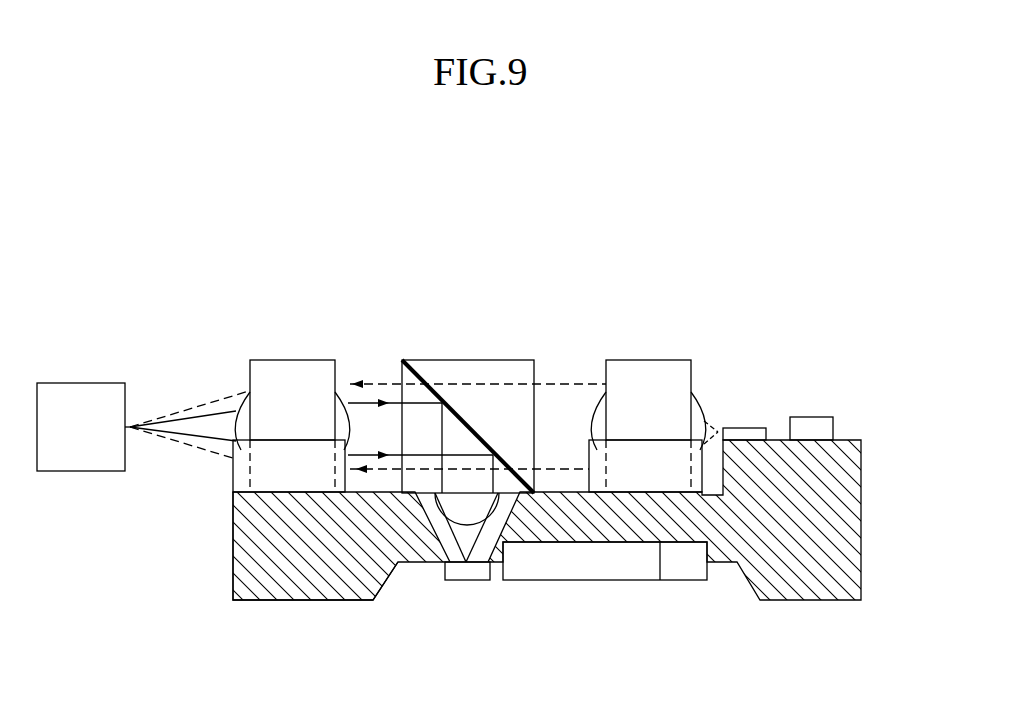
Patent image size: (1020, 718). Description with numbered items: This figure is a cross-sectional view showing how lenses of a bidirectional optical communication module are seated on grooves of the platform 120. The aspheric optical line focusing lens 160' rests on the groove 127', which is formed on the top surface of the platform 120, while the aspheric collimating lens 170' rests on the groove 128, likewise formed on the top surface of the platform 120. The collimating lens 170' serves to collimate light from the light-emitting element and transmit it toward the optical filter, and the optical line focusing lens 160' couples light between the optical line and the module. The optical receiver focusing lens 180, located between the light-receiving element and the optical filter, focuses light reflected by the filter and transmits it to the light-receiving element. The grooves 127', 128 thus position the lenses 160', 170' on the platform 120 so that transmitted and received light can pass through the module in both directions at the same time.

The optical line focusing lens 160' is at (295, 384).
The collimating lens 170' is at (659, 384).
The optical receiver focusing lens 180 is at (442, 498).
The groove 128 is at (680, 494).
The groove 127' is at (315, 567).
The platform 120 is at (849, 635).